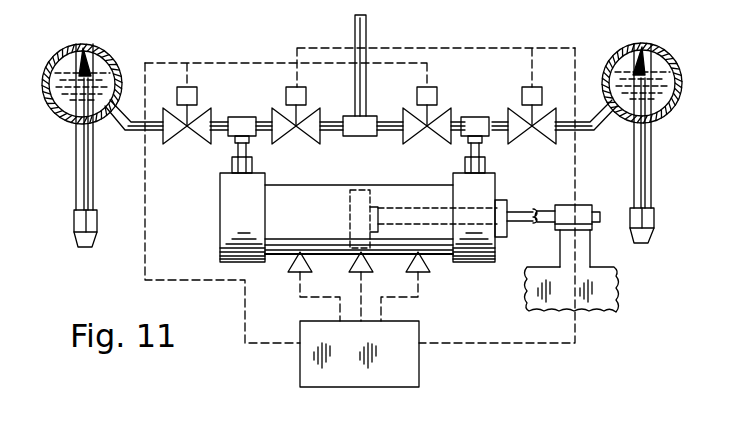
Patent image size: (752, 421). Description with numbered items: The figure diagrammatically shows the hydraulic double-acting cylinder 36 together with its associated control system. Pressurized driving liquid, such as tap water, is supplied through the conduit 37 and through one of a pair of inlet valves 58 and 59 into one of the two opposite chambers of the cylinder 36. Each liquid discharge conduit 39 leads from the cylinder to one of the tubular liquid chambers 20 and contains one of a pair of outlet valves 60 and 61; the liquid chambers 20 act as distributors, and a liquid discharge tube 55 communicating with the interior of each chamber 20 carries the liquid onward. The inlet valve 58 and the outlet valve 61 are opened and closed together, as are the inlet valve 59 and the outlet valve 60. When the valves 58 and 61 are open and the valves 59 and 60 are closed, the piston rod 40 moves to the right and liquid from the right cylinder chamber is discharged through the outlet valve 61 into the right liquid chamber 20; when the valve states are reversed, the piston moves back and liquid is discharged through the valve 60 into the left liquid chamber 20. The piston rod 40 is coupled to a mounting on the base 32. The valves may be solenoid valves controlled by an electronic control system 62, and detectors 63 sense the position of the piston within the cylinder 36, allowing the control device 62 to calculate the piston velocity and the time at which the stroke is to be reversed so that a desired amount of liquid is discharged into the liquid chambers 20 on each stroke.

The liquid chamber 20 is at (47, 65).
The liquid discharge tube 55 is at (78, 172).
The liquid discharge conduit 39 is at (131, 133).
The outlet valve 60 is at (196, 139).
The inlet valve 58 is at (307, 137).
The inlet valve 59 is at (441, 137).
The outlet valve 61 is at (546, 135).
The liquid conduit 37 is at (367, 27).
The hydraulic double-acting cylinder 36 is at (335, 194).
The piston rod 40 is at (530, 221).
The base 32 is at (614, 285).
The detector 63 is at (298, 270).
The electronic control system 62 is at (419, 365).